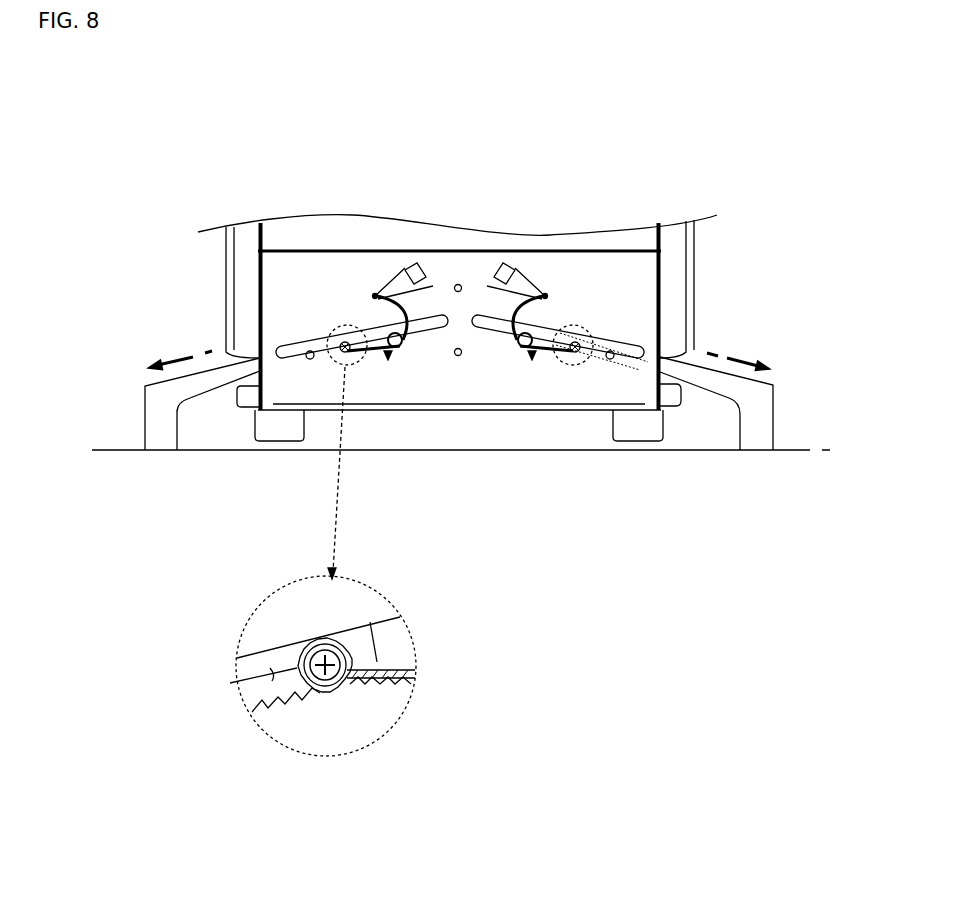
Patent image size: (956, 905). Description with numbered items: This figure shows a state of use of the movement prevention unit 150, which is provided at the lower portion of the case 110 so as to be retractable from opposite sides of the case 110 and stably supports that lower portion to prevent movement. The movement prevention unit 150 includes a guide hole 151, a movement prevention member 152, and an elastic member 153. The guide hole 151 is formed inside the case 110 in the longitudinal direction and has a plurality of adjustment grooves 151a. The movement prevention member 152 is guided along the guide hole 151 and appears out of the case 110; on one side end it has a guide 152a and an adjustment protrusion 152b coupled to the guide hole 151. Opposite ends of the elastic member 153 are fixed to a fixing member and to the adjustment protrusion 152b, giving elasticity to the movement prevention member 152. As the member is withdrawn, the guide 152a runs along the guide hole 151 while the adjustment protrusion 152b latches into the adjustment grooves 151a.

The case 110 is at (228, 286).
The movement prevention unit 150 is at (396, 350).
The guide hole 151 is at (437, 330).
The adjustment grooves 151a is at (285, 705).
The movement prevention member 152 is at (162, 432).
The guide 152a is at (308, 360).
The adjustment protrusion 152b is at (327, 693).
The elastic member 153 is at (403, 283).